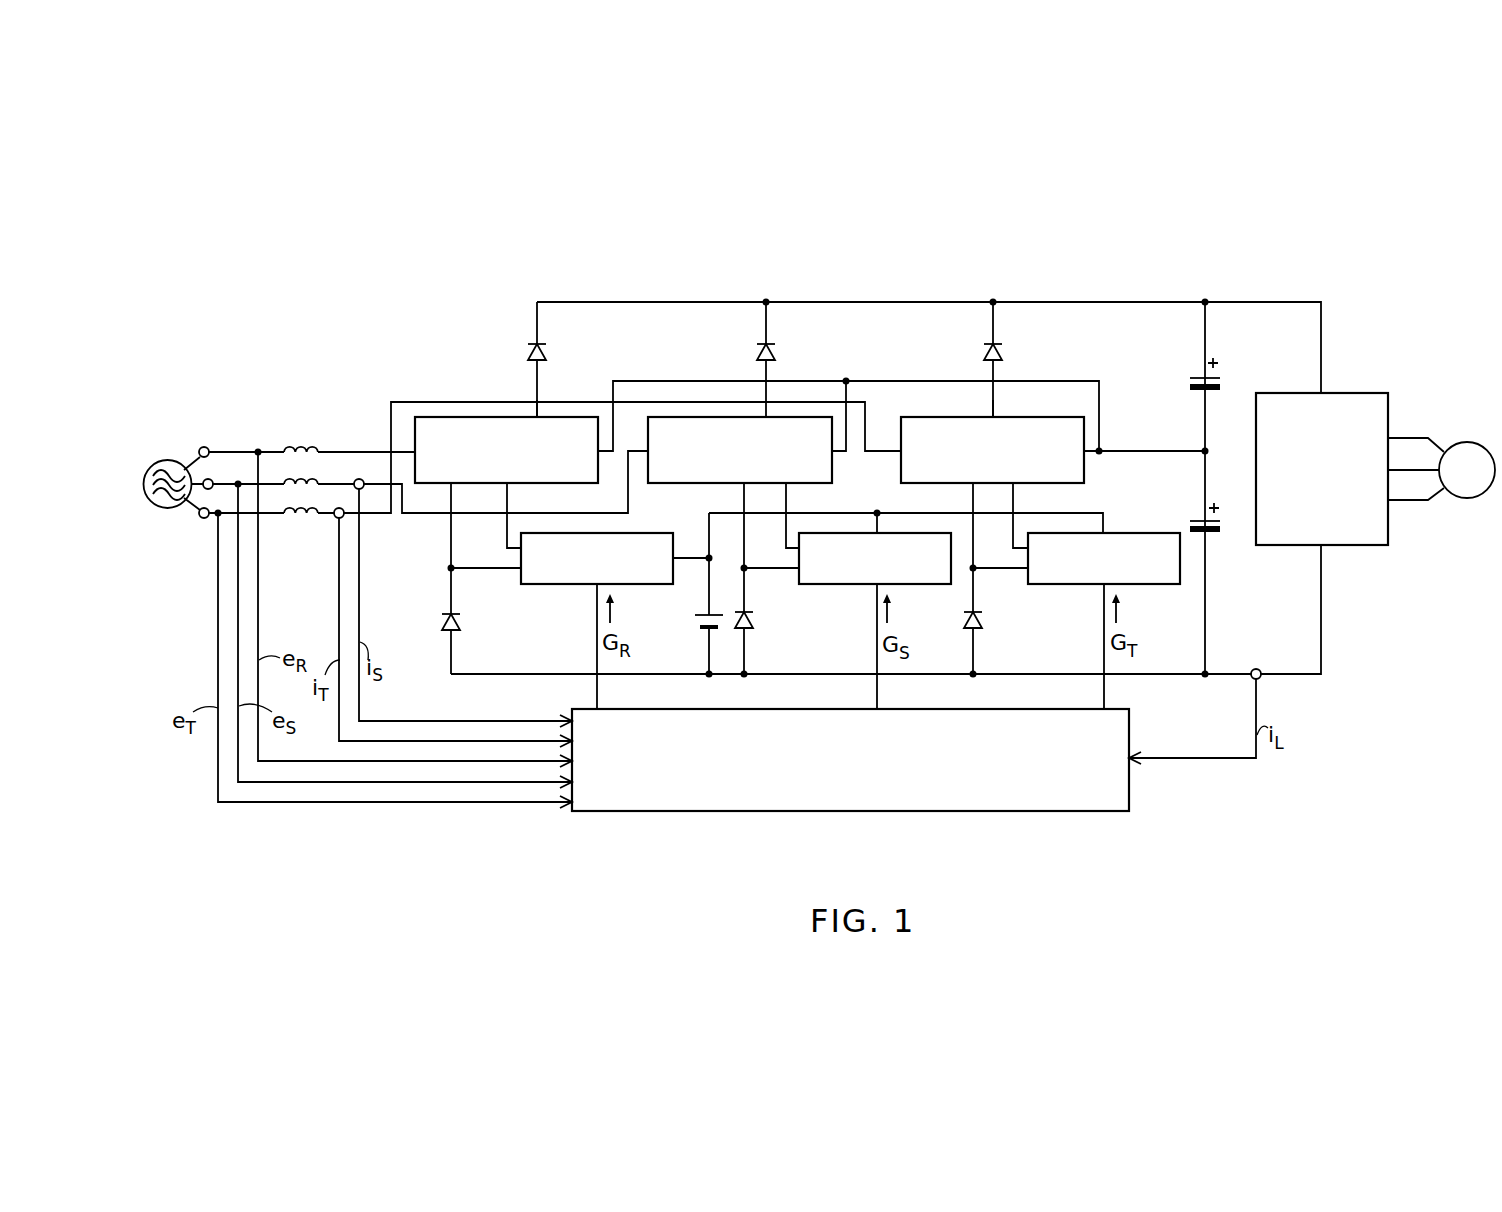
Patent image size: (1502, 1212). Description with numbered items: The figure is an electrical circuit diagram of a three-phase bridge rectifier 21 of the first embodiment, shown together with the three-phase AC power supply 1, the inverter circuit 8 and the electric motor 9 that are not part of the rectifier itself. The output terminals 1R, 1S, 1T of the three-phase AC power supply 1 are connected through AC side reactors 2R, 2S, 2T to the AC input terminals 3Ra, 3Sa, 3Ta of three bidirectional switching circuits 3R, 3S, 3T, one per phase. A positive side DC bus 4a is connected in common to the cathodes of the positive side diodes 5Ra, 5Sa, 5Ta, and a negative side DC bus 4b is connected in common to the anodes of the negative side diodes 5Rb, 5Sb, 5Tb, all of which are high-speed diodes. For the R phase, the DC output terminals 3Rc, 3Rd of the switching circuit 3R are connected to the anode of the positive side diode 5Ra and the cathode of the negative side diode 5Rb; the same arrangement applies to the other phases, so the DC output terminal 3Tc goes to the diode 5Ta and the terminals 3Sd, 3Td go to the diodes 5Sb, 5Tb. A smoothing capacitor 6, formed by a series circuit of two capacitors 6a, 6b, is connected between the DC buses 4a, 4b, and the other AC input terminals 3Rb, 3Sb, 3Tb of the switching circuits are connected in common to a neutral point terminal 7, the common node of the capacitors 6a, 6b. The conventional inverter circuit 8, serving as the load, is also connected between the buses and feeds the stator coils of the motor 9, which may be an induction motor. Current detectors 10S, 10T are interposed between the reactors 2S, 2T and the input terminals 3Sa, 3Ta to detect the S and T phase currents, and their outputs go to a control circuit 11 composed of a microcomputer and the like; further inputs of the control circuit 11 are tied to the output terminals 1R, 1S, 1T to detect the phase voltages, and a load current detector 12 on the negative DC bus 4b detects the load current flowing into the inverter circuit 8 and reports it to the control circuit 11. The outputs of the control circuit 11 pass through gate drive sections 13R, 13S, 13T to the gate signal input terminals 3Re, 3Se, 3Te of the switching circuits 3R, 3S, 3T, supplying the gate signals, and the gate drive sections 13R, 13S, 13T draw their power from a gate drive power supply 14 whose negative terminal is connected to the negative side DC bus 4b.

The three-phase AC power supply 1 is at (171, 458).
The output terminal 1R is at (204, 447).
The output terminal 1S is at (212, 479).
The output terminal 1T is at (201, 518).
The reactor 2R is at (302, 437).
The reactor 2S is at (307, 473).
The reactor 2T is at (303, 522).
The current detector 10S is at (362, 490).
The current detector 10T is at (338, 520).
The bidirectional switching circuit 3R is at (460, 417).
The bidirectional switching circuit 3S is at (727, 417).
The bidirectional switching circuit 3T is at (953, 417).
The AC input terminal 3Ra is at (413, 450).
The AC input terminal 3Rb is at (611, 418).
The DC output terminal 3Rc is at (538, 417).
The DC output terminal 3Rd is at (453, 490).
The gate signal input terminal 3Re is at (510, 487).
The AC input terminal 3Sa is at (645, 450).
The AC input terminal 3Sb is at (833, 452).
The DC output terminal 3Sd is at (742, 484).
The gate signal input terminal 3Se is at (788, 485).
The AC input terminal 3Ta is at (899, 450).
The AC input terminal 3Tb is at (1085, 453).
The DC output terminal 3Tc is at (994, 415).
The DC output terminal 3Td is at (969, 484).
The gate signal input terminal 3Te is at (1014, 484).
The positive side DC bus 4a is at (618, 302).
The negative side DC bus 4b is at (497, 676).
The three-phase bridge rectifier 21 is at (846, 298).
The positive side diode 5Ra is at (527, 351).
The positive side diode 5Sa is at (777, 351).
The positive side diode 5Ta is at (1002, 352).
The negative side diode 5Rb is at (441, 631).
The negative side diode 5Sb is at (753, 618).
The negative side diode 5Tb is at (983, 620).
The smoothing capacitor 6 is at (1205, 488).
The capacitor 6a is at (1185, 385).
The capacitor 6b is at (1224, 530).
The neutral point terminal 7 is at (1210, 450).
The inverter circuit 8 is at (1362, 393).
The electric motor 9 is at (1462, 442).
The control circuit 11 is at (1130, 724).
The load current detector 12 is at (1260, 679).
The gate drive section 13R is at (562, 587).
The gate drive section 13S is at (913, 585).
The gate drive section 13T is at (1158, 585).
The gate drive power supply 14 is at (692, 620).